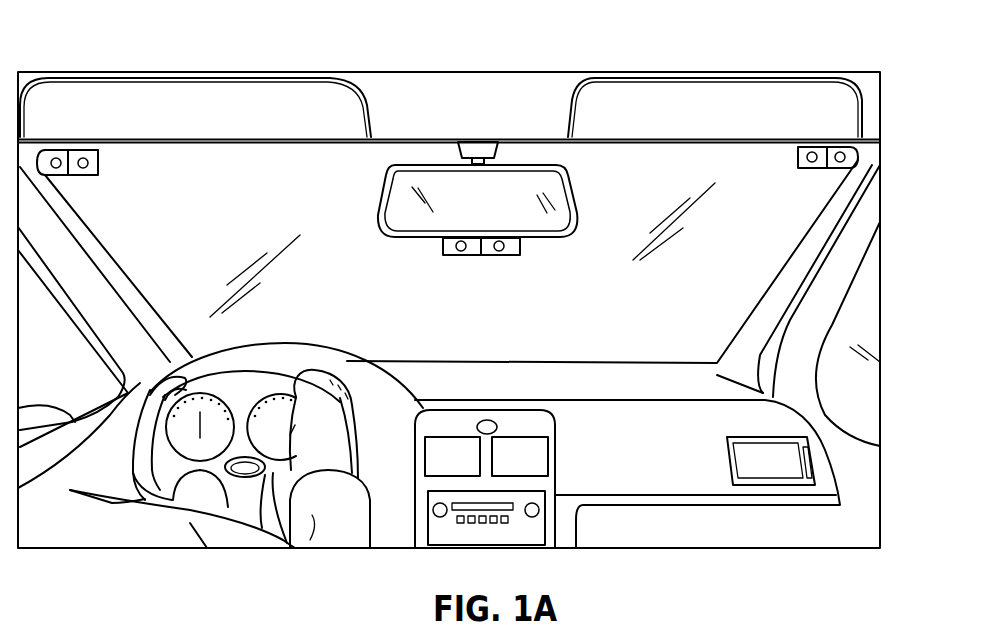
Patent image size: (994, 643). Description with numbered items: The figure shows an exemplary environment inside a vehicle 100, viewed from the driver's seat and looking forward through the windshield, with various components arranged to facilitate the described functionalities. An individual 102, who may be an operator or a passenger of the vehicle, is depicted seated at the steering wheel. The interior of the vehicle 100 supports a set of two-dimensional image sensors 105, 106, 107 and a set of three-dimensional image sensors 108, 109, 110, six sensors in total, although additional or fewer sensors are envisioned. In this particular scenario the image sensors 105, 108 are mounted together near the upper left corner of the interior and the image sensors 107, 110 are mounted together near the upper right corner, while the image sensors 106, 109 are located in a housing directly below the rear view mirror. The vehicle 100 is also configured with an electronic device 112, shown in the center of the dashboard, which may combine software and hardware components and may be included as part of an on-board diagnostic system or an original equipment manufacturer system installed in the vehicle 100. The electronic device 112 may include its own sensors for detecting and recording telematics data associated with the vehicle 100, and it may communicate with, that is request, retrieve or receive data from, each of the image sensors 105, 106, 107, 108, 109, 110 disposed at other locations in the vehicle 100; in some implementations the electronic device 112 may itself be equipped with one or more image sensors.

The vehicle 100 is at (530, 36).
The individual 102 is at (86, 531).
The 2-D image sensor 105 is at (62, 172).
The 2-D image sensor 106 is at (461, 254).
The 2-D image sensor 107 is at (812, 169).
The 3-D image sensor 108 is at (90, 163).
The 3-D image sensor 109 is at (500, 254).
The 3-D image sensor 110 is at (860, 157).
The electronic device 112 is at (521, 424).